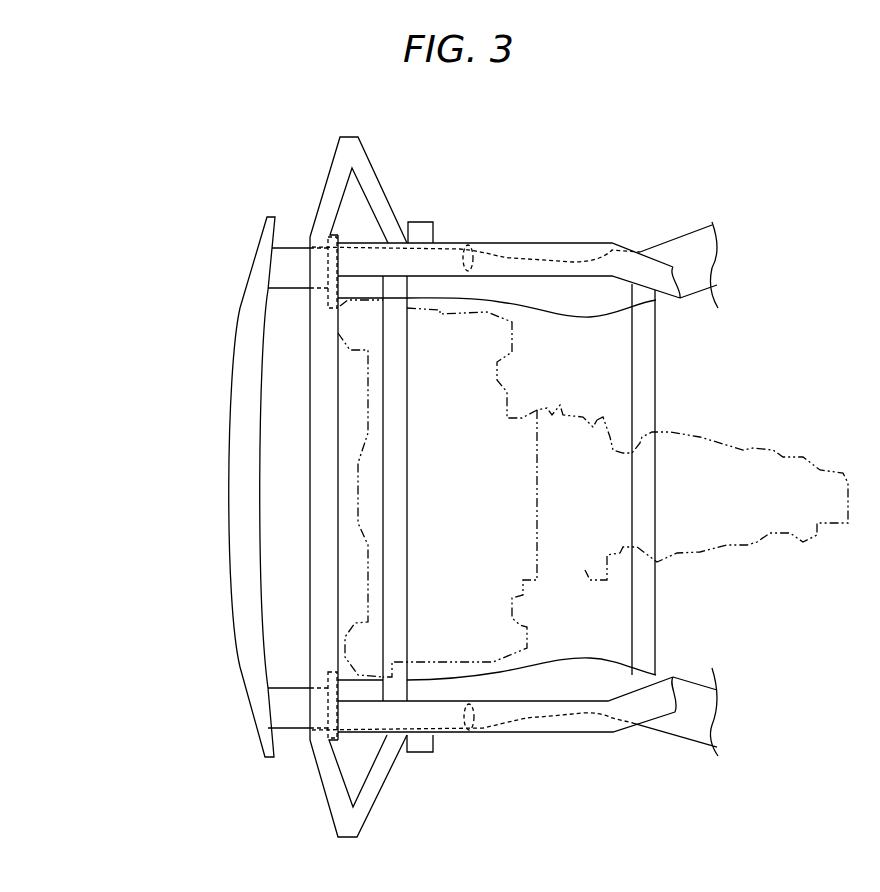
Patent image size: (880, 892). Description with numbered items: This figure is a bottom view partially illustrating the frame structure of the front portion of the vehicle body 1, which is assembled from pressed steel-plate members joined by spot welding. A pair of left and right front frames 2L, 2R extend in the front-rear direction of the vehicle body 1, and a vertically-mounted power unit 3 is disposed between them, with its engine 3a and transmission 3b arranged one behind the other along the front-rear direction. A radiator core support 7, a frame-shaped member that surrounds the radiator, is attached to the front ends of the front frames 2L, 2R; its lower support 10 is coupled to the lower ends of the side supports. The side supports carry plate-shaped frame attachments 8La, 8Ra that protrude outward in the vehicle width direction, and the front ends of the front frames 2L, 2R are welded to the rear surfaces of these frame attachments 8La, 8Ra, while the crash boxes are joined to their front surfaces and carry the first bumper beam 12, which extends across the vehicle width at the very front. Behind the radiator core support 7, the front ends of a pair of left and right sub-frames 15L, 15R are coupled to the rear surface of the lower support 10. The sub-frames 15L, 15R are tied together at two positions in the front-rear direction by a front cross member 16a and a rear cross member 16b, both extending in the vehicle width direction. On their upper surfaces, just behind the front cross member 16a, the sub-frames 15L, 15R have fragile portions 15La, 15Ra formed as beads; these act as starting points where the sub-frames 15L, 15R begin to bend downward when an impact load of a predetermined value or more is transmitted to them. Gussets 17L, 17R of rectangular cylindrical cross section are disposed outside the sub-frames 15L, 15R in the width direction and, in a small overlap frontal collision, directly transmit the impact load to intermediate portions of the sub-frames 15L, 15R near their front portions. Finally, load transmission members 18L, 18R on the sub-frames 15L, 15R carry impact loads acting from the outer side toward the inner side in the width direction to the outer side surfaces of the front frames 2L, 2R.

The vehicle body 1 is at (117, 241).
The left front frame 2L is at (543, 243).
The right front frame 2R is at (540, 733).
The power unit 3 is at (596, 396).
The engine 3a is at (512, 342).
The transmission 3b is at (750, 448).
The radiator core support 7 is at (299, 585).
The left frame attachment 8La is at (320, 267).
The right frame attachment 8Ra is at (307, 710).
The lower support 10 is at (310, 500).
The first bumper beam 12 is at (228, 432).
The left sub-frame 15L is at (610, 240).
The left fragile portion 15La is at (487, 240).
The right sub-frame 15R is at (607, 733).
The right fragile portion 15Ra is at (480, 733).
The front cross member 16a is at (407, 490).
The rear cross member 16b is at (655, 615).
The left gusset 17L is at (377, 168).
The right gusset 17R is at (377, 803).
The left load transmission member 18L is at (422, 220).
The right load transmission member 18R is at (420, 753).